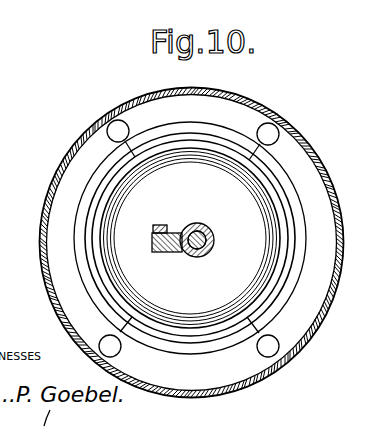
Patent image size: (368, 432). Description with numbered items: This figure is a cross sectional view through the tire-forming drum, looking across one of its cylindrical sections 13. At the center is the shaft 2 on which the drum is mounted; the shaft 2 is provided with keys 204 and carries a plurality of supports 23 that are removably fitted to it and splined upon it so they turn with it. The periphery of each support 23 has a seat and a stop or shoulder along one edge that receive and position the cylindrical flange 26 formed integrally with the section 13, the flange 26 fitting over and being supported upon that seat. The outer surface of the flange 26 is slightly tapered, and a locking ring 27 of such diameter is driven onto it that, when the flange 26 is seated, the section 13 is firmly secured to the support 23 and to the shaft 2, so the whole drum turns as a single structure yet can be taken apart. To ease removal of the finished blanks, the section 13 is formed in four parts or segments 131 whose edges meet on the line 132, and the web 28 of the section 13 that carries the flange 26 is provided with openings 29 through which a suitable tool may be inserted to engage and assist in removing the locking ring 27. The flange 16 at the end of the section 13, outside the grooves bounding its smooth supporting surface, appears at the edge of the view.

The cylindrical section 13 is at (78, 152).
The locking ring 27 is at (175, 124).
The cylindrical flange 26 is at (88, 222).
The support 23 is at (110, 270).
The opening 29 is at (117, 131).
The line 132 is at (128, 149).
The segment 131 is at (194, 246).
The web 28 is at (308, 162).
The key 204 is at (198, 229).
The shaft 2 is at (178, 260).
The flange 16 is at (352, 405).